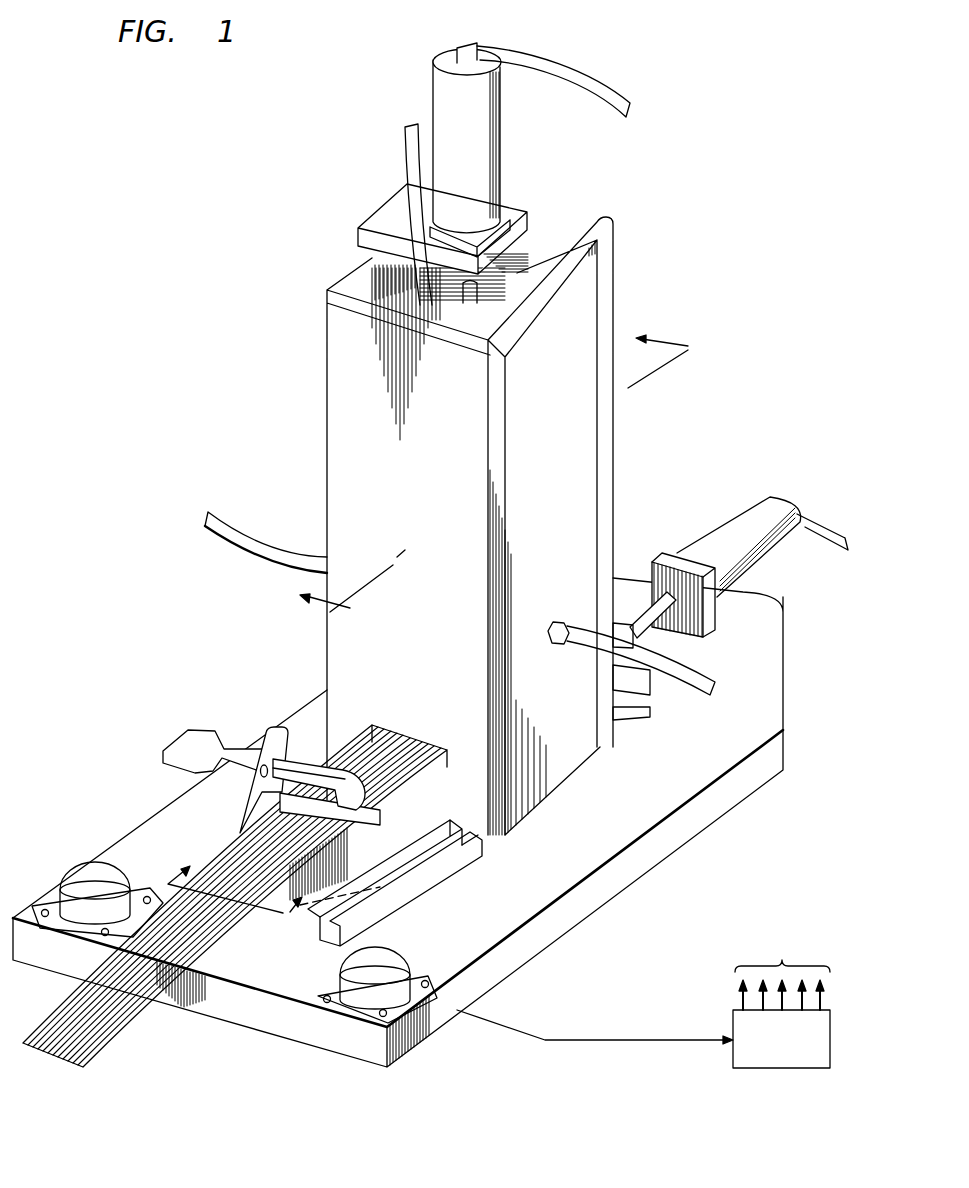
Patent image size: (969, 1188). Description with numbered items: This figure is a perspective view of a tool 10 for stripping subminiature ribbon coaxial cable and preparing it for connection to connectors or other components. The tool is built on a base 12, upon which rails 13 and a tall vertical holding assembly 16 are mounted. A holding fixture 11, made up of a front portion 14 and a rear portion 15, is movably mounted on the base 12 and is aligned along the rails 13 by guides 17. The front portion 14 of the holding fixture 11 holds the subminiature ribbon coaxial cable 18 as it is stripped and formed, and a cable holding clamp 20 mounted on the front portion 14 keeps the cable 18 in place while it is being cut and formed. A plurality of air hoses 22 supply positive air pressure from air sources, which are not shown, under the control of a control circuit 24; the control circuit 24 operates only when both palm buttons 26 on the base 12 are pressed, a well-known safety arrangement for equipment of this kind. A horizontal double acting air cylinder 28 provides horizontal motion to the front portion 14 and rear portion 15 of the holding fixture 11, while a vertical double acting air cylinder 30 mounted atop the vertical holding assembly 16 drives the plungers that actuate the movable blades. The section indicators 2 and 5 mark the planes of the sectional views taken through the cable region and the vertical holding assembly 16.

The tool 10 is at (218, 136).
The holding fixture 11 is at (612, 672).
The base 12 is at (736, 803).
The rails 13 is at (370, 903).
The front portion 14 is at (377, 850).
The rear portion 15 is at (627, 671).
The vertical holding assembly 16 is at (618, 500).
The guides 17 is at (625, 702).
The subminiature ribbon coaxial cable 18 is at (120, 1027).
The cable holding clamp 20 is at (181, 741).
The air hoses 22 is at (583, 78).
The control circuit 24 is at (785, 1073).
The palm buttons 26 is at (78, 873).
The horizontal double acting air cylinder 28 is at (747, 507).
The vertical double acting air cylinder 30 is at (503, 140).
The section line 2- 2 is at (263, 899).
The section line 5- 5 is at (499, 478).